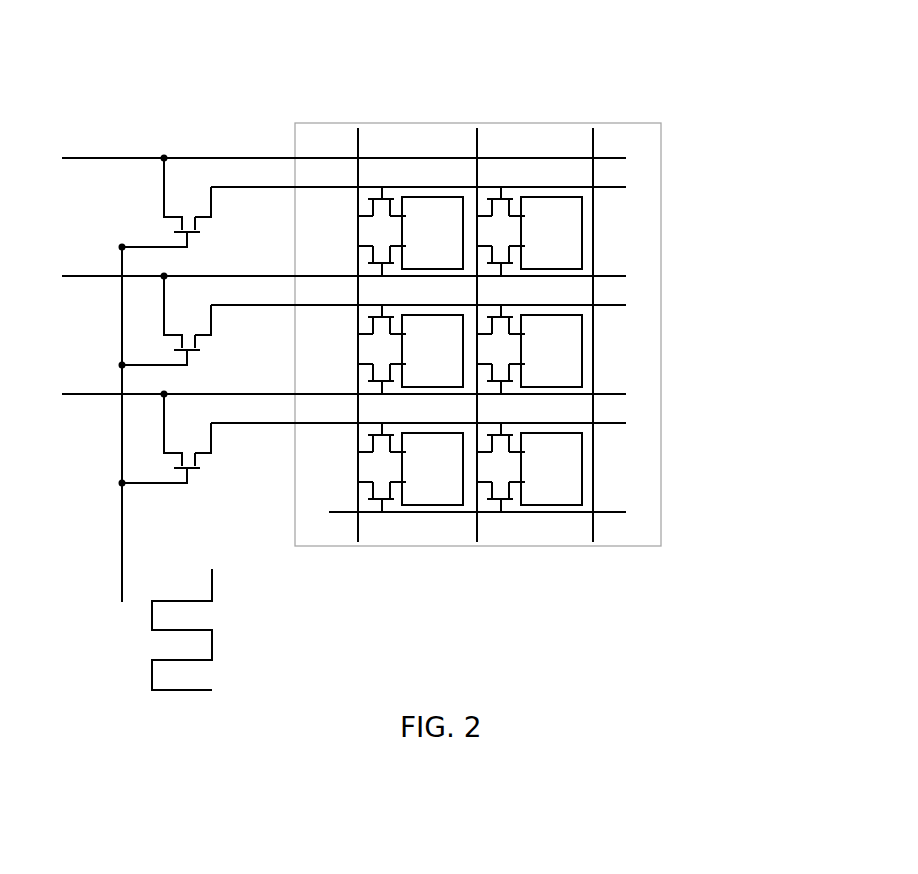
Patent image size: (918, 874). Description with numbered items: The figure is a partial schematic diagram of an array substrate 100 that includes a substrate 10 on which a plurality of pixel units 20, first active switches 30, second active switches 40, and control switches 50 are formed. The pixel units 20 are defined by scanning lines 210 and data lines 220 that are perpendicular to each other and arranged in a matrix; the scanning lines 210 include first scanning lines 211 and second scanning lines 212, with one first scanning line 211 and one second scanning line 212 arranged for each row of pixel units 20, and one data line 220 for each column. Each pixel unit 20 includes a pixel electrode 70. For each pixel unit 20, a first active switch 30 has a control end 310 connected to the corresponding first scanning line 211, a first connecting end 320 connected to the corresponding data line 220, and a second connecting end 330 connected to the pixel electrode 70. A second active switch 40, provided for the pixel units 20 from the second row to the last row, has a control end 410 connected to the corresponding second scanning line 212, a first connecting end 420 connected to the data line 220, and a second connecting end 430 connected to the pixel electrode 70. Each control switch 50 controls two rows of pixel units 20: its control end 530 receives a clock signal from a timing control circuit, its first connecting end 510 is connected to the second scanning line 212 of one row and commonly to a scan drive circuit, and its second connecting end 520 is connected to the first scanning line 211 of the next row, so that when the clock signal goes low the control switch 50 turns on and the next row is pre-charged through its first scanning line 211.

The array substrate 100 is at (420, 27).
The substrate 10 is at (661, 165).
The pixel unit 20 is at (550, 478).
The first active switch 30 is at (504, 129).
The control end 310 is at (501, 192).
The first connecting end 320 is at (482, 215).
The second connecting end 330 is at (517, 214).
The second active switch 40 is at (626, 300).
The control end 410 is at (502, 263).
The first connecting end 420 is at (478, 247).
The second connecting end 430 is at (520, 245).
The control switch 50 is at (218, 158).
The first connecting end 510 is at (164, 156).
The second connecting end 520 is at (211, 206).
The control end 530 is at (187, 243).
The pixel electrode 70 is at (516, 506).
The scanning line 210 is at (423, 454).
The first scanning line 211 is at (607, 428).
The second scanning line 212 is at (618, 396).
The data line 220 is at (476, 525).